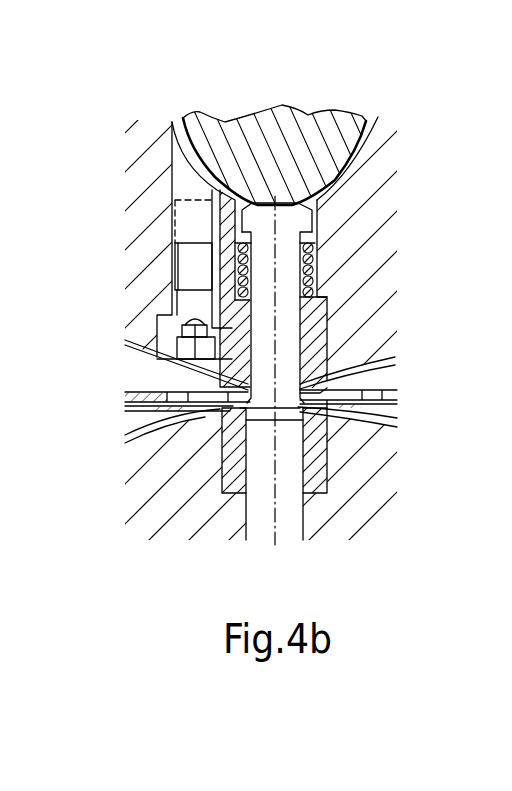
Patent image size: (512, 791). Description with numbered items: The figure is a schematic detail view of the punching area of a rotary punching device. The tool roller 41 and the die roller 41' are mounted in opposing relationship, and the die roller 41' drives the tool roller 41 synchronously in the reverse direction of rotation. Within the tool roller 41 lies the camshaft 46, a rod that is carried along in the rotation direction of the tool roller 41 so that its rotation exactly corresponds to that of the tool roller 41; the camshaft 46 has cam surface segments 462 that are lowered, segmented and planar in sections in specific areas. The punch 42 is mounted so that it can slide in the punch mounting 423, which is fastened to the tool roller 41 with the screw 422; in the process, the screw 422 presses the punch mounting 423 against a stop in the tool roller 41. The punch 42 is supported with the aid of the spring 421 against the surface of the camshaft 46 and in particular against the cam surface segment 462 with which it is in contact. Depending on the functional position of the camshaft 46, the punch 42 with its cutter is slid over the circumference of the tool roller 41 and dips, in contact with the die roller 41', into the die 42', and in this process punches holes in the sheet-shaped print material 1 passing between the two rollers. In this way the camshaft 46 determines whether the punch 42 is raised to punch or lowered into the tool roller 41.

The sheet-shaped print material 1 is at (395, 402).
The tool roller 41 is at (256, 325).
The die roller 41' is at (260, 325).
The punch 42 is at (340, 370).
The die 42' is at (256, 340).
The spring 421 is at (313, 270).
The screw 422 is at (178, 278).
The punch mounting 423 is at (317, 347).
The camshaft 46 is at (312, 137).
The cam surface segment 462 is at (208, 170).